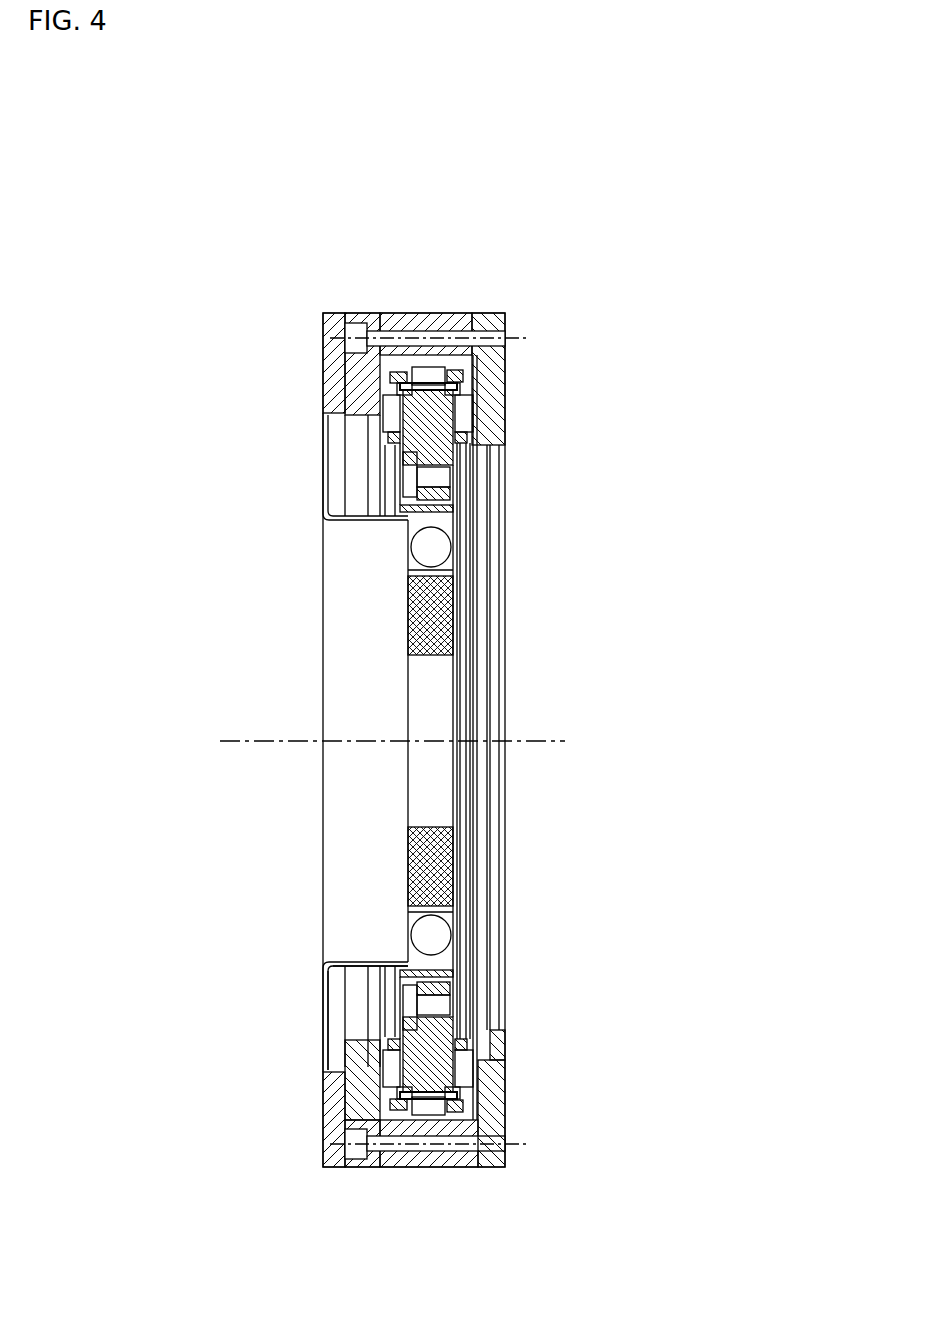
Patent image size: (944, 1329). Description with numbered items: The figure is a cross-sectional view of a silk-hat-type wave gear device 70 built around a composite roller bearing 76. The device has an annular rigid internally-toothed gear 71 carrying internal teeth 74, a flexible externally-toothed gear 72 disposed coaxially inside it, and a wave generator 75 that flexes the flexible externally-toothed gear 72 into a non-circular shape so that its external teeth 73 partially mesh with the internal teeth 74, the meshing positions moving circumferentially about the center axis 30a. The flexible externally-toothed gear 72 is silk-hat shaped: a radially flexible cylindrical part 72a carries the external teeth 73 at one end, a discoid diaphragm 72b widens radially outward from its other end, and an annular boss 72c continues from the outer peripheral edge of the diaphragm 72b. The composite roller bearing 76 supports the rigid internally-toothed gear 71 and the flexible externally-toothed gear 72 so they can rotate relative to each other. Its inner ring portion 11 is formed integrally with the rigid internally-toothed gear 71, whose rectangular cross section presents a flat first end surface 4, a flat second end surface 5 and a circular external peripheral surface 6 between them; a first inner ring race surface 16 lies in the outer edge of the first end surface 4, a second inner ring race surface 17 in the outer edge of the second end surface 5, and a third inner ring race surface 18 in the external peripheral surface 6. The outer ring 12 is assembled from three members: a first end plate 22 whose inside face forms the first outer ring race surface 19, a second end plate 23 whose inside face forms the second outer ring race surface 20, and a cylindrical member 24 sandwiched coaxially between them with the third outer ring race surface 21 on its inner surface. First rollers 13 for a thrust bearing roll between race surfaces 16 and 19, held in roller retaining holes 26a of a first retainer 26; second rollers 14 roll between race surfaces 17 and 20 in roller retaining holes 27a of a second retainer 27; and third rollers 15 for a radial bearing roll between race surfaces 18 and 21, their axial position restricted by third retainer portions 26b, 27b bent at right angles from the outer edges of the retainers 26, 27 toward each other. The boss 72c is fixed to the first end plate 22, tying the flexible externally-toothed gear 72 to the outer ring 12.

The wave gear device 70 is at (580, 262).
The composite roller bearing 76 is at (366, 306).
The flexible externally-toothed gear 72 is at (316, 524).
The cylindrical part 72a is at (365, 960).
The diaphragm 72b is at (330, 1002).
The boss 72c is at (335, 1140).
The first retainer 26 is at (331, 335).
The roller retaining holes 26a is at (405, 390).
The third retainer portion 26b is at (400, 372).
The second retainer 27 is at (514, 335).
The roller retaining holes 27a is at (455, 392).
The third retainer portion 27b is at (453, 380).
The third rollers 15 is at (430, 366).
The circular external peripheral surface 6 is at (430, 383).
The rigid internally-toothed gear 71 is at (462, 422).
The first rollers 13 is at (392, 415).
The second rollers 14 is at (470, 412).
The first end surface 4 is at (395, 440).
The second end surface 5 is at (465, 440).
The external teeth 73 is at (410, 508).
The internal teeth 74 is at (440, 512).
The wave generator 75 is at (462, 614).
The rotation axis 30a is at (255, 742).
The inner ring portion 11 is at (340, 1072).
The first inner ring race surface 16 is at (395, 1067).
The second inner ring race surface 17 is at (462, 1048).
The third inner ring race surface 18 is at (398, 1095).
The outer ring 12 is at (549, 1074).
The first outer ring race surface 19 is at (477, 1072).
The second outer ring race surface 20 is at (468, 1052).
The third outer ring race surface 21 is at (466, 1098).
The first end plate 22 is at (369, 1175).
The second end plate 23 is at (434, 1175).
The cylindrical member 24 is at (498, 1175).